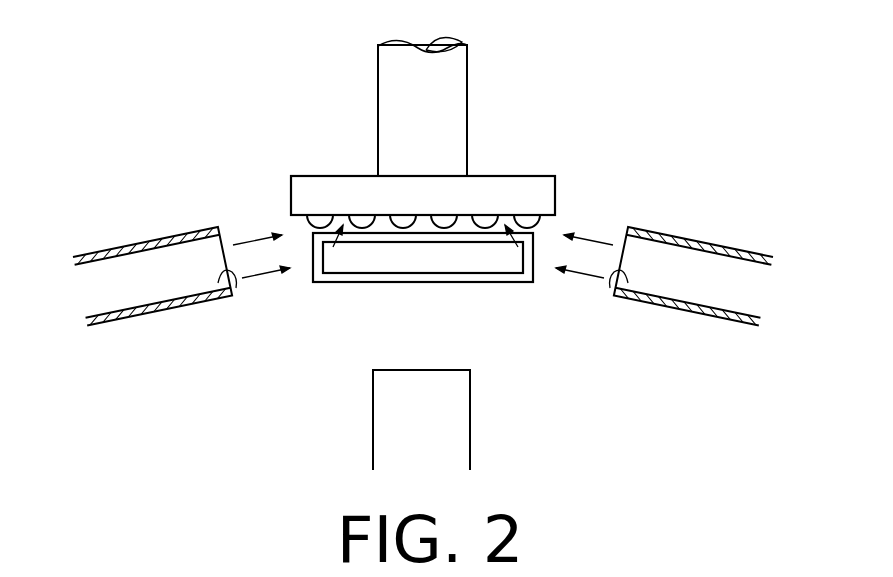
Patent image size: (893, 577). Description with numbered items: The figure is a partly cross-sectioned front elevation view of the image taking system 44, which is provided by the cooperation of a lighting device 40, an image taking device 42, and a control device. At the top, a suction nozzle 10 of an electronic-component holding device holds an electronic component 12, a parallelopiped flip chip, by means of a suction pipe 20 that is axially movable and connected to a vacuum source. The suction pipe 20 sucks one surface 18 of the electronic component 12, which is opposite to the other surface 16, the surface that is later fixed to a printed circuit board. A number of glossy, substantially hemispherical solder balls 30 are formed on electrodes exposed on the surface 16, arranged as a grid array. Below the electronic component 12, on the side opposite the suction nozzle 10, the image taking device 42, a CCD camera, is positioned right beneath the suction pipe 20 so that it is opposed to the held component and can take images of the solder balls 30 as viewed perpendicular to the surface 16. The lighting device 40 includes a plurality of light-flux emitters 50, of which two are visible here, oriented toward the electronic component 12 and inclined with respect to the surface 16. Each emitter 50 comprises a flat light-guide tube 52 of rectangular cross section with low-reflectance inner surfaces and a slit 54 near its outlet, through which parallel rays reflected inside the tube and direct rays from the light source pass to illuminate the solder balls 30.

The suction nozzle 10 is at (485, 75).
The electronic component 12 is at (543, 188).
The surface 16 is at (292, 218).
The surface 18 is at (332, 175).
The suction pipe 20 is at (455, 143).
The solder balls 30 is at (316, 227).
The lighting device 40 is at (187, 185).
The image taking device 42 is at (390, 402).
The image taking system 44 is at (578, 358).
The light-flux emitters 50 is at (433, 280).
The light-guide tube 52 is at (143, 242).
The slit 54 is at (236, 288).